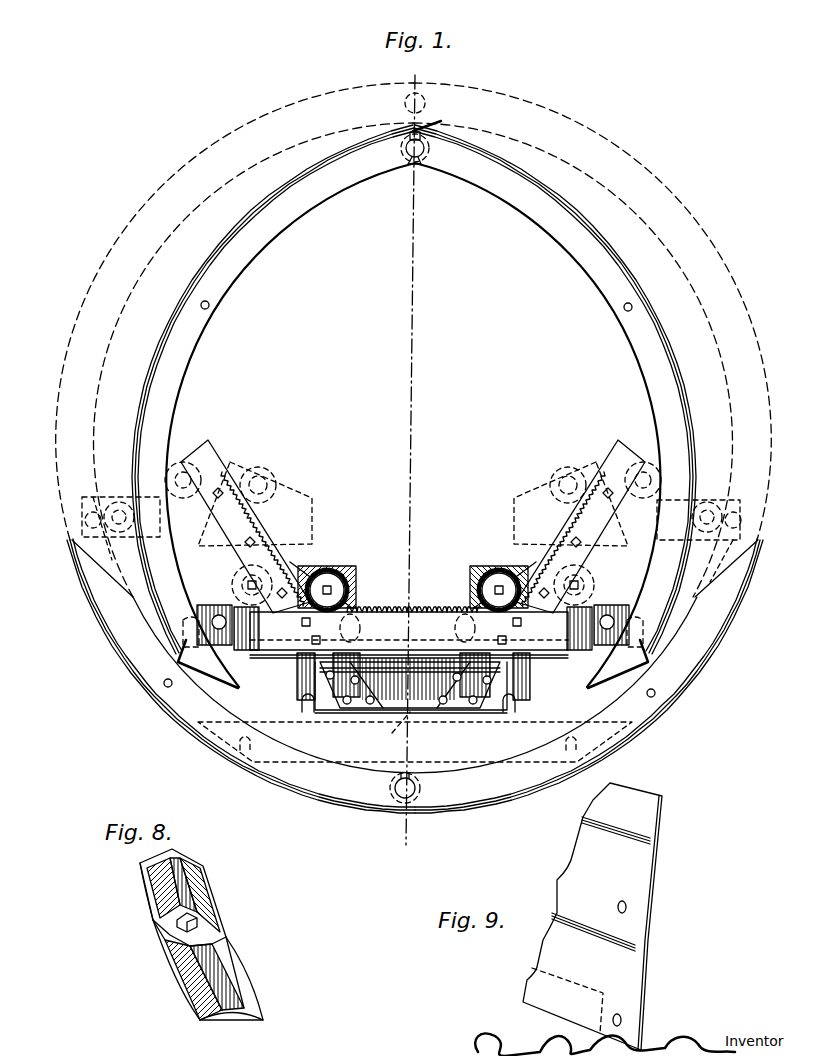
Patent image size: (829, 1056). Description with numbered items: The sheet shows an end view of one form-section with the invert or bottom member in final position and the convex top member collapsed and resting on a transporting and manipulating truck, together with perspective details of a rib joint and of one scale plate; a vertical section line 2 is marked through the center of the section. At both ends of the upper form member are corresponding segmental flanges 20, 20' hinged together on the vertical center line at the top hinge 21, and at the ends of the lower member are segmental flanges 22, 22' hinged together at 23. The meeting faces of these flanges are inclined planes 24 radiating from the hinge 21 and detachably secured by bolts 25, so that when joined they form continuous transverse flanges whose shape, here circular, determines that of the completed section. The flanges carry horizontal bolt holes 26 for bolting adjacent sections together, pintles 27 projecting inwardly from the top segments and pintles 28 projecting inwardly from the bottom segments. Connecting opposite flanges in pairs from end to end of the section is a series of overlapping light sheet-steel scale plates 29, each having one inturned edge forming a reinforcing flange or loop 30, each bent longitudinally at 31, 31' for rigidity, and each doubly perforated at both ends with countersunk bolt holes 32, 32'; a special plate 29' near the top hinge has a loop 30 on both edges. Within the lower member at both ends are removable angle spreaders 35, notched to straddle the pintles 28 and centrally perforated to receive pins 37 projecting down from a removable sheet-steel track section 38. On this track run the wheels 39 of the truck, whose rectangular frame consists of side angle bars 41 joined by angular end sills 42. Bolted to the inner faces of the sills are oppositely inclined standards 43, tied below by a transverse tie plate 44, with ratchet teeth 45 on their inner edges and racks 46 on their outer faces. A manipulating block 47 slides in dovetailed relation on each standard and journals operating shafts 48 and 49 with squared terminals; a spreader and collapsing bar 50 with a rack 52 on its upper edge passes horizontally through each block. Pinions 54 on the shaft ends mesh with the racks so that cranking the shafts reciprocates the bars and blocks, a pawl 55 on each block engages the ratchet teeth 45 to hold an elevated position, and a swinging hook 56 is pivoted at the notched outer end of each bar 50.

In FIG. 1, the section line 2 is at (411, 453).
In FIG. 1, the segmental flange 20 is at (221, 385).
In FIG. 8, the segmental flange 20 is at (195, 897).
In FIG. 1, the segmental flange 20' is at (604, 385).
In FIG. 1, the hinge 21 is at (410, 160).
In FIG. 1, the segmental flange 22 is at (241, 676).
In FIG. 8, the segmental flange 22 is at (225, 970).
In FIG. 1, the segmental flange 22' is at (589, 676).
In FIG. 1, the hinge 23 is at (398, 797).
In FIG. 8, the inclined plane 24 is at (166, 928).
In FIG. 8, the bolt 25 is at (205, 923).
In FIG. 1, the bolt hole 26 is at (208, 309).
In FIG. 1, the pintle 27 is at (413, 652).
In FIG. 1, the pintle 28 is at (242, 760).
In FIG. 1, the scale plate 29 is at (410, 482).
In FIG. 9, the scale plate 29 is at (604, 916).
In FIG. 1, the special plate 29' is at (451, 122).
In FIG. 9, the reinforcing flange 30 is at (553, 976).
In FIG. 1, the longitudinal bend 31 is at (425, 391).
In FIG. 9, the longitudinal bend 31 is at (617, 932).
In FIG. 1, the longitudinal bend 31' is at (419, 389).
In FIG. 9, the longitudinal bend 31' is at (634, 832).
In FIG. 9, the bolt hole 32 is at (615, 999).
In FIG. 9, the bolt hole 32' is at (599, 904).
In FIG. 1, the spreader 35 is at (460, 762).
In FIG. 1, the pin 37 is at (386, 734).
In FIG. 1, the track section 38 is at (355, 713).
In FIG. 1, the wheel 39 is at (300, 705).
In FIG. 1, the side angle bar 41 is at (297, 688).
In FIG. 1, the end sill 42 is at (409, 635).
In FIG. 1, the inclined standard 43 is at (208, 440).
In FIG. 1, the tie plate 44 is at (410, 683).
In FIG. 1, the ratchet teeth 45 is at (300, 543).
In FIG. 1, the rack 46 is at (258, 470).
In FIG. 1, the manipulating block 47 is at (413, 585).
In FIG. 1, the operating shaft 48 is at (246, 580).
In FIG. 1, the operating shaft 49 is at (333, 588).
In FIG. 1, the spreader and collapsing bar 50 is at (411, 638).
In FIG. 1, the rack 52 is at (384, 607).
In FIG. 1, the pinion 54 is at (329, 572).
In FIG. 1, the pawl 55 is at (362, 630).
In FIG. 1, the swinging hook 56 is at (216, 604).